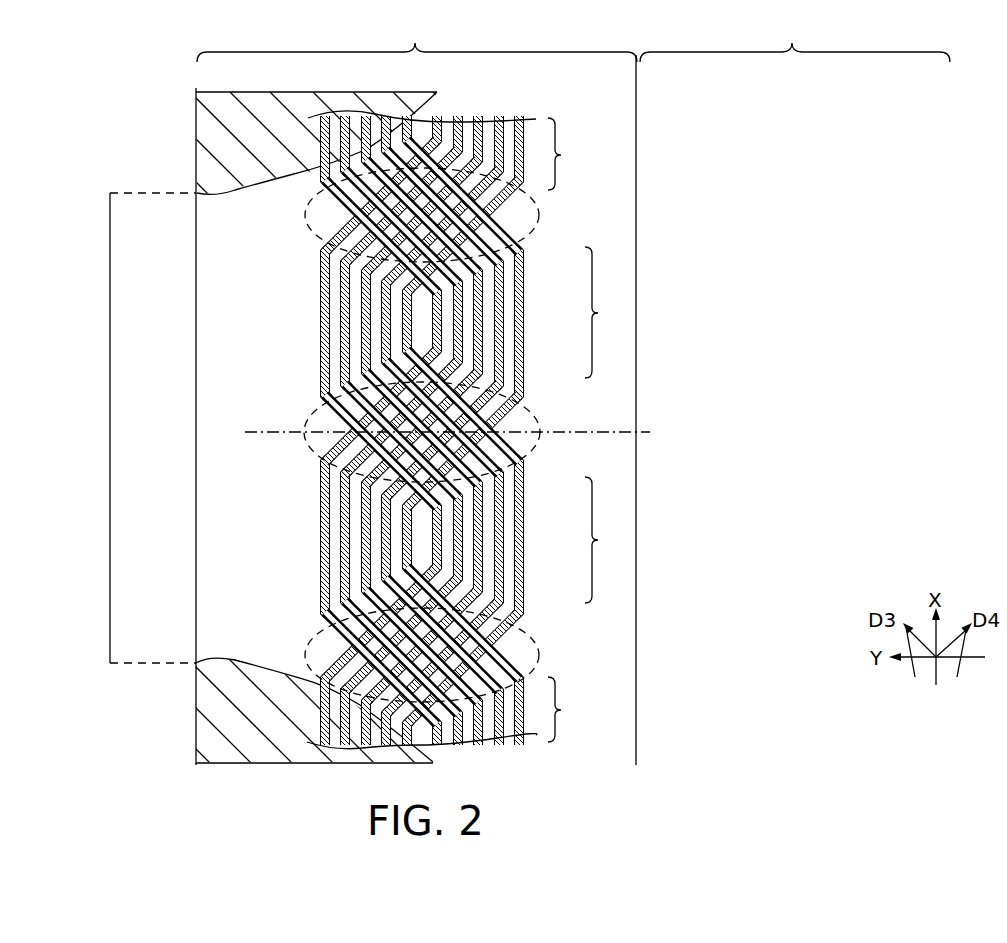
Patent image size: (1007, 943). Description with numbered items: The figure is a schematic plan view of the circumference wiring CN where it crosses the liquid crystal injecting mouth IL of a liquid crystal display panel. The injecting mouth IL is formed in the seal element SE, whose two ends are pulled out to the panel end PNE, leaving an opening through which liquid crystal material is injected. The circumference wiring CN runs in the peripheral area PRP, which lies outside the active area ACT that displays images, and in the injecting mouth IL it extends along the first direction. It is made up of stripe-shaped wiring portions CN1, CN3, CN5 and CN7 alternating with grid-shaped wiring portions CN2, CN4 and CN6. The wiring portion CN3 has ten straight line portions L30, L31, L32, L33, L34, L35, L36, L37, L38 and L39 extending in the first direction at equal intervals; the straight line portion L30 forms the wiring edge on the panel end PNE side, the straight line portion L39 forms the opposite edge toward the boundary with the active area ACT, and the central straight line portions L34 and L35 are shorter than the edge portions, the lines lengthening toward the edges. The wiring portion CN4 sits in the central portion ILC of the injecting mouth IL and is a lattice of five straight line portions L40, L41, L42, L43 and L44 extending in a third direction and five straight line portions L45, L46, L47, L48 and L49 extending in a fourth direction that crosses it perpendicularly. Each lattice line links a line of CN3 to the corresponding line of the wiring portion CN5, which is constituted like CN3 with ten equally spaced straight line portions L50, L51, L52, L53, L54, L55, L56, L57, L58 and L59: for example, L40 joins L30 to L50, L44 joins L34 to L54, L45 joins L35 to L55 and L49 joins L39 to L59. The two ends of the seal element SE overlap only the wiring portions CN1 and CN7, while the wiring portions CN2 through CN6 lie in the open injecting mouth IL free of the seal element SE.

The peripheral area PRP is at (417, 40).
The active area ACT is at (793, 392).
The circumference wiring CN is at (528, 111).
The wiring portion CN1 is at (584, 154).
The wiring portion CN2 is at (540, 215).
The wiring portion CN3 is at (620, 312).
The wiring portion CN4 is at (298, 390).
The wiring portion CN5 is at (620, 540).
The wiring portion CN6 is at (540, 650).
The wiring portion CN7 is at (464, 713).
The seal element SE is at (206, 128).
The liquid crystal injecting mouth IL is at (136, 428).
The central portion of the liquid crystal injecting mouth ILC is at (449, 430).
The panel end PNE is at (188, 636).
The straight line portion L30 is at (327, 266).
The straight line portion L31 is at (347, 291).
The straight line portion L32 is at (368, 316).
The straight line portion L33 is at (388, 341).
The straight line portion L34 is at (409, 366).
The straight line portion L35 is at (517, 266).
The straight line portion L36 is at (497, 291).
The straight line portion L37 is at (476, 316).
The straight line portion L38 is at (456, 341).
The straight line portion L39 is at (435, 366).
The straight line portion L40 is at (350, 384).
The straight line portion L41 is at (330, 401).
The straight line portion L42 is at (345, 410).
The straight line portion L43 is at (335, 436).
The straight line portion L44 is at (330, 462).
The straight line portion L45 is at (527, 382).
The straight line portion L46 is at (515, 402).
The straight line portion L47 is at (540, 412).
The straight line portion L48 is at (515, 436).
The straight line portion L49 is at (530, 447).
The straight line portion L50 is at (517, 490).
The straight line portion L51 is at (497, 515).
The straight line portion L52 is at (476, 540).
The straight line portion L53 is at (456, 565).
The straight line portion L54 is at (435, 592).
The straight line portion L55 is at (327, 500).
The straight line portion L56 is at (347, 525).
The straight line portion L57 is at (368, 550).
The straight line portion L58 is at (388, 576).
The straight line portion L59 is at (409, 601).